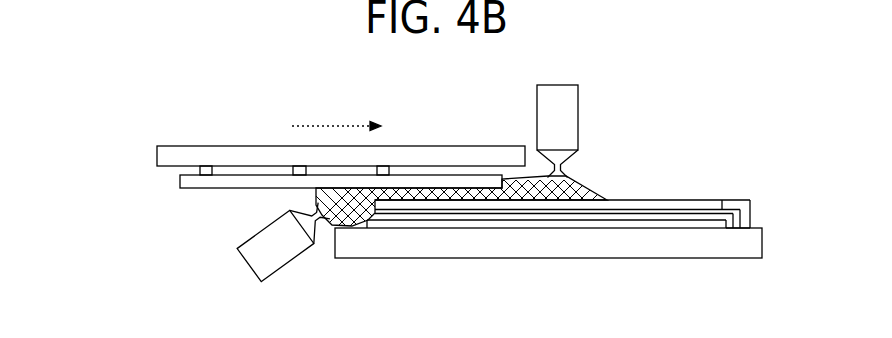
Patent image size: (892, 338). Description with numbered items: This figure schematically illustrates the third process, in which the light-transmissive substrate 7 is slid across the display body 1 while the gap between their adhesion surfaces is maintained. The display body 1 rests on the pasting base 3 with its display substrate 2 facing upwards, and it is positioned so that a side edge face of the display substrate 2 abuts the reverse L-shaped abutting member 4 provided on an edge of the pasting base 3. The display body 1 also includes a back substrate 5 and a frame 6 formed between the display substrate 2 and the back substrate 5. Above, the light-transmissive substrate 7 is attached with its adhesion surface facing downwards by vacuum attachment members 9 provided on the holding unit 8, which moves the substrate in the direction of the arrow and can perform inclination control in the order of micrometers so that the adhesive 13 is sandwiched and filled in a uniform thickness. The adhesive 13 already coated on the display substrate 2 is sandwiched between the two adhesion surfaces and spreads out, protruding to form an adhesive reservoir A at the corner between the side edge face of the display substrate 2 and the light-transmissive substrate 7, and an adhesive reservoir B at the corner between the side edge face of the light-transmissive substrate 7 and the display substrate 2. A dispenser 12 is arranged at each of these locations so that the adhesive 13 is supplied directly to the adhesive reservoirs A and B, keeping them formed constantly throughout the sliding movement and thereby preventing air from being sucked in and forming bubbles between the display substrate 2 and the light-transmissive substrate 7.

The display body 1 is at (548, 223).
The display substrate 2 is at (640, 199).
The pasting base 3 is at (568, 252).
The abutting member 4 is at (740, 199).
The back substrate 5 is at (723, 223).
The frame 6 is at (640, 222).
The light-transmissive substrate 7 is at (186, 189).
The holding unit 8 is at (263, 150).
The vacuum attachment member 9 is at (201, 169).
The dispenser 12 is at (575, 105).
The adhesive 13 is at (440, 188).
The adhesive reservoir A is at (503, 165).
The adhesive reservoir B is at (356, 224).